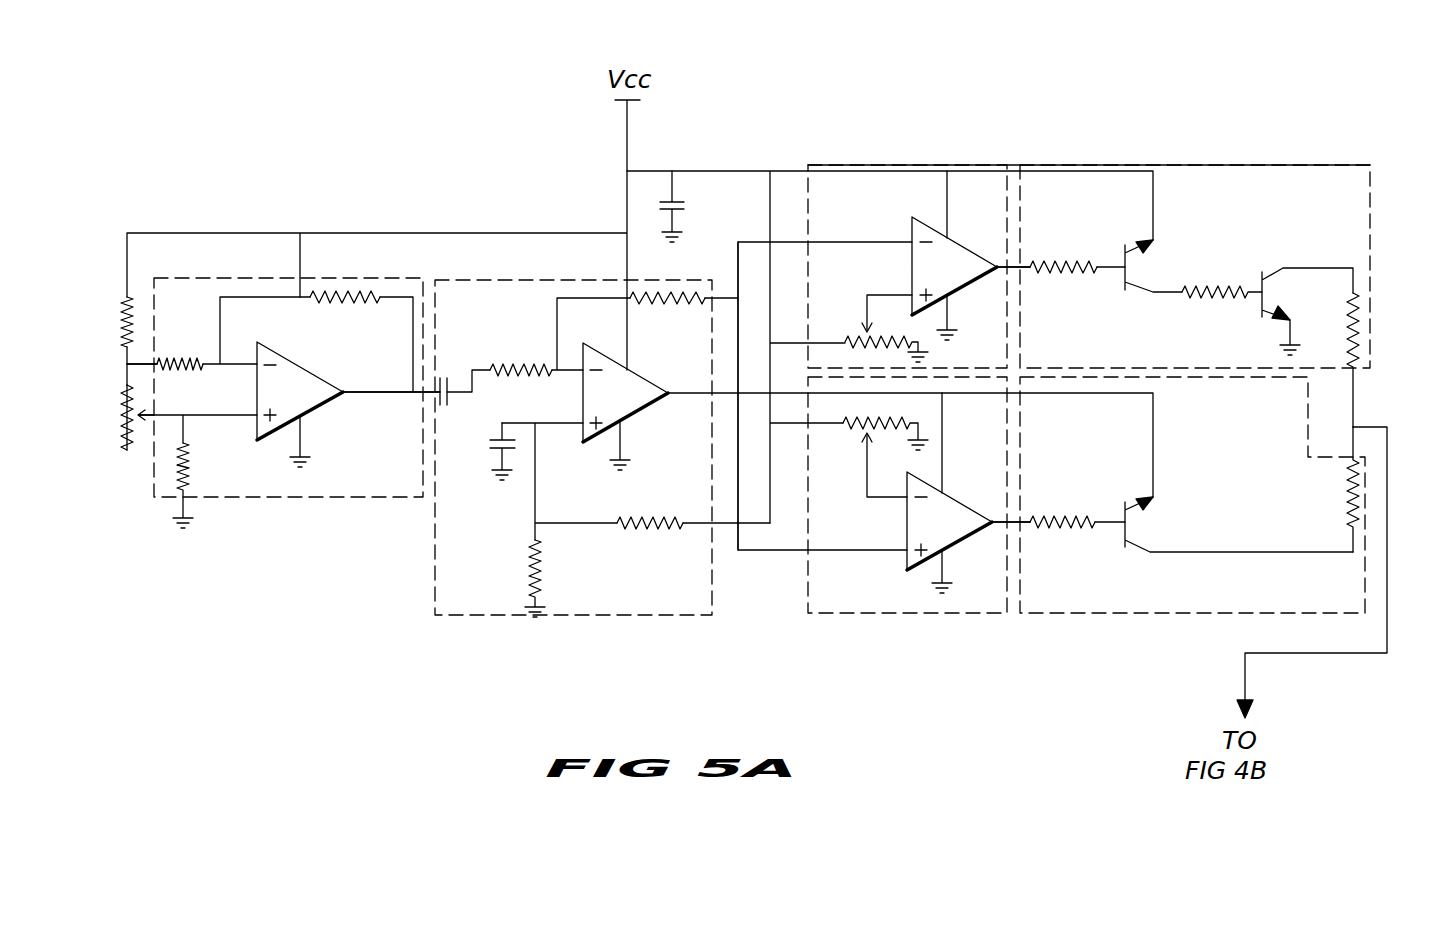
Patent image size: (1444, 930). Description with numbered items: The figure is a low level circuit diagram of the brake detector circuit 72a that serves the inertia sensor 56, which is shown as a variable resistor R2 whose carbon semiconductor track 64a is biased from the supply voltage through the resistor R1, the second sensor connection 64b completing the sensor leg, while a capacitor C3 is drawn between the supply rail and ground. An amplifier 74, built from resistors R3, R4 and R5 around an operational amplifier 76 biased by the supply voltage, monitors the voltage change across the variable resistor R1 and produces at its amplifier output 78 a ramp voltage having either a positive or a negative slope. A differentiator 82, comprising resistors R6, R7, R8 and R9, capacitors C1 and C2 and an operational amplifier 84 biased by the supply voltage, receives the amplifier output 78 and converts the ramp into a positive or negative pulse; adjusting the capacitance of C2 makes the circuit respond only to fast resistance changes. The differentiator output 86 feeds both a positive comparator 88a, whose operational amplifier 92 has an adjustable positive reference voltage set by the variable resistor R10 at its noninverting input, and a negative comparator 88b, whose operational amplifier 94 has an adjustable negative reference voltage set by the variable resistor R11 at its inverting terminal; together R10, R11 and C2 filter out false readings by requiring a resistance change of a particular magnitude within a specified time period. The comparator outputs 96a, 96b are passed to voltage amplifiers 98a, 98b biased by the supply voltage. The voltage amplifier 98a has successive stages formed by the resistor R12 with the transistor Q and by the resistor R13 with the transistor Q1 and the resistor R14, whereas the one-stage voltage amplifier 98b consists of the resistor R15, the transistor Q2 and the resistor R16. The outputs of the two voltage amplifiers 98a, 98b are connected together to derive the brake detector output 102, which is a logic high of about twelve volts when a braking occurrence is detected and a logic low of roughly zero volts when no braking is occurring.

The brake detector circuit 72a is at (982, 92).
The inertia sensor 56 is at (113, 432).
The carbon semiconductor track 64a is at (127, 364).
The sensor wiper lead 64b is at (154, 425).
The amplifier 74 is at (290, 497).
The operational amplifier 76 is at (315, 395).
The amplifier output 78 is at (413, 395).
The differentiator 82 is at (595, 615).
The operational amplifier 84 is at (630, 397).
The differentiator output 86 is at (740, 352).
The positive comparator 88a is at (887, 163).
The negative comparator 88b is at (880, 613).
The operational amplifier 92 is at (960, 272).
The operational amplifier 94 is at (925, 565).
The comparator output 96a is at (1010, 268).
The comparator output 96b is at (1036, 550).
The voltage amplifier 98a is at (1200, 165).
The one-stage voltage amplifier 98b is at (1178, 613).
The brake detector output 102 is at (1372, 427).
The variable resistor R1 is at (100, 417).
The variable resistor R2 is at (100, 322).
The resistor R3 is at (180, 348).
The resistor R4 is at (199, 485).
The resistor R5 is at (345, 313).
The resistor R6 is at (521, 353).
The resistor R7 is at (667, 314).
The resistor R8 is at (554, 578).
The resistor R9 is at (650, 505).
The variable resistor R10 is at (859, 343).
The variable resistor R11 is at (885, 420).
The resistor R12 is at (1063, 250).
The resistor R13 is at (1222, 277).
The resistor R14 is at (1325, 360).
The resistor R15 is at (1062, 505).
The resistor R16 is at (1321, 489).
The capacitor C1 is at (451, 408).
The capacitor C2 is at (482, 451).
The capacitor C3 is at (691, 206).
The transistor Q is at (1153, 266).
The transistor Q1 is at (1307, 311).
The transistor Q2 is at (1239, 524).